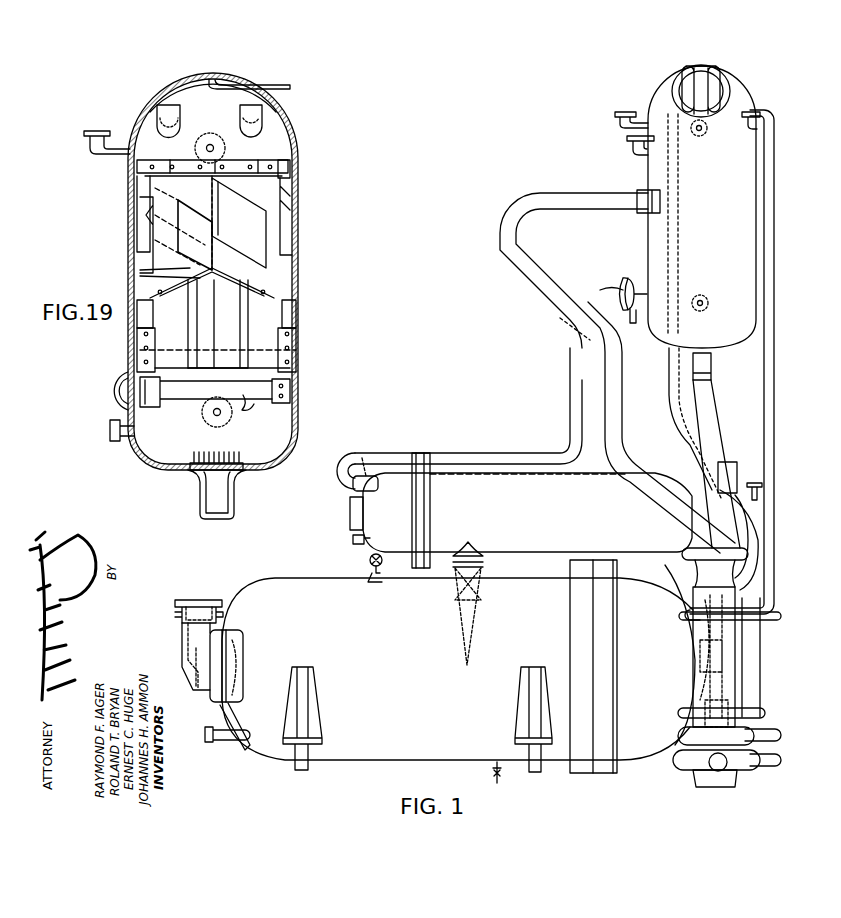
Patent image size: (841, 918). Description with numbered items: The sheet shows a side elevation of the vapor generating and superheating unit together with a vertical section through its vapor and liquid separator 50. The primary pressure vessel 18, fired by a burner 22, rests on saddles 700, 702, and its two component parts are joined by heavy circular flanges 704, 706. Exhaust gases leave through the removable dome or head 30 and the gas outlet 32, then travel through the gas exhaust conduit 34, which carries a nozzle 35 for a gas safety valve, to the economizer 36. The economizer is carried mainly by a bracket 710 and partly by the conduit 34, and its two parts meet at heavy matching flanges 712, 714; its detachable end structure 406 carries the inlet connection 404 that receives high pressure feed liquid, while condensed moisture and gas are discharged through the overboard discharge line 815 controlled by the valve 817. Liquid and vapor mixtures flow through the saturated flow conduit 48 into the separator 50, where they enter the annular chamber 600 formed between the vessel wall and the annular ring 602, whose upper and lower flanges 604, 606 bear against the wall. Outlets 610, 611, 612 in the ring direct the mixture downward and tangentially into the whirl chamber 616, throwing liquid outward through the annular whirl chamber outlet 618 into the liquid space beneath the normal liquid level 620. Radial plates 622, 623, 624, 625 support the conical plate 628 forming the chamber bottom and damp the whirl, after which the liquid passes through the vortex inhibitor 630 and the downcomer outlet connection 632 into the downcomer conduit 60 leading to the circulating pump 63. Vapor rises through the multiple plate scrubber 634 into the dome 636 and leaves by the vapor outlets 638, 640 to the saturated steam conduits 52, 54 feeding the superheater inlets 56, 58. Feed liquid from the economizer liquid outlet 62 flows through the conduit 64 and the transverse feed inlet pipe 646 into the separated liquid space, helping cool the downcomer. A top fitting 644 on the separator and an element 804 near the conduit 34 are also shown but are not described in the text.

In FIG. 1, the primary pressure vessel 18 is at (363, 748).
In FIG. 1, the burner 22 is at (178, 624).
In FIG. 1, the removable dome or head 30 is at (648, 732).
In FIG. 1, the gas outlet 32 is at (730, 690).
In FIG. 1, the gas exhaust conduit 34 is at (745, 526).
In FIG. 1, the nozzle 35 is at (760, 499).
In FIG. 1, the economizer 36 is at (556, 516).
In FIG. 1, the saturated flow conduit 48 is at (614, 423).
In FIG. 19, the vapor and liquid separator 50 is at (300, 228).
In FIG. 1, the vapor and liquid separator 50 is at (645, 170).
In FIG. 1, the saturated steam conduit 52 is at (671, 368).
In FIG. 1, the saturated steam conduit 54 is at (772, 142).
In FIG. 1, the superheater inlet 56 is at (748, 637).
In FIG. 1, the superheater inlet 58 is at (740, 696).
In FIG. 1, the downcomer conduit 60 is at (706, 406).
In FIG. 1, the economizer liquid outlet 62 is at (362, 485).
In FIG. 1, the pump 63 is at (750, 766).
In FIG. 1, the feed conduit 64 is at (386, 452).
In FIG. 1, the inlet connection 404 is at (353, 541).
In FIG. 1, the detachable dome or end structure 406 is at (357, 516).
In FIG. 19, the annular chamber 600 is at (289, 190).
In FIG. 19, the annular ring 602 is at (140, 187).
In FIG. 19, the upper flange 604 is at (289, 179).
In FIG. 19, the lower flange 606 is at (300, 262).
In FIG. 19, the outlet 610 is at (258, 223).
In FIG. 19, the outlet 611 is at (185, 234).
In FIG. 19, the outlet 612 is at (142, 220).
In FIG. 19, the whirl chamber 616 is at (160, 257).
In FIG. 19, the annular whirl chamber outlet 618 is at (285, 288).
In FIG. 19, the normal liquid level 620 is at (262, 348).
In FIG. 19, the radial plate 622 is at (160, 344).
In FIG. 19, the radial plate 623 is at (205, 357).
In FIG. 19, the radial plate 624 is at (240, 326).
In FIG. 19, the radial plate 625 is at (268, 361).
In FIG. 19, the conical plate 628 is at (190, 269).
In FIG. 19, the vortex inhibitor 630 is at (190, 448).
In FIG. 19, the downcomer outlet connection 632 is at (198, 495).
In FIG. 19, the multiple plate scrubber 634 is at (258, 160).
In FIG. 19, the dome 636 is at (195, 79).
In FIG. 19, the vapor outlet 638 is at (160, 115).
In FIG. 19, the vapor outlet 640 is at (256, 123).
In FIG. 1, the top fitting 644 is at (712, 82).
In FIG. 19, the feed inlet pipe 646 is at (258, 405).
In FIG. 1, the saddle 700 is at (306, 712).
In FIG. 1, the saddle 702 is at (528, 702).
In FIG. 1, the heavy circular flange 704 is at (571, 640).
In FIG. 1, the heavy circular flange 706 is at (606, 636).
In FIG. 1, the bracket 710 is at (484, 563).
In FIG. 1, the heavy matching flange 712 is at (426, 510).
In FIG. 1, the heavy matching flange 714 is at (413, 510).
In FIG. 1, the block 804 is at (728, 481).
In FIG. 1, the overboard discharge line 815 is at (380, 552).
In FIG. 1, the valve 817 is at (380, 575).